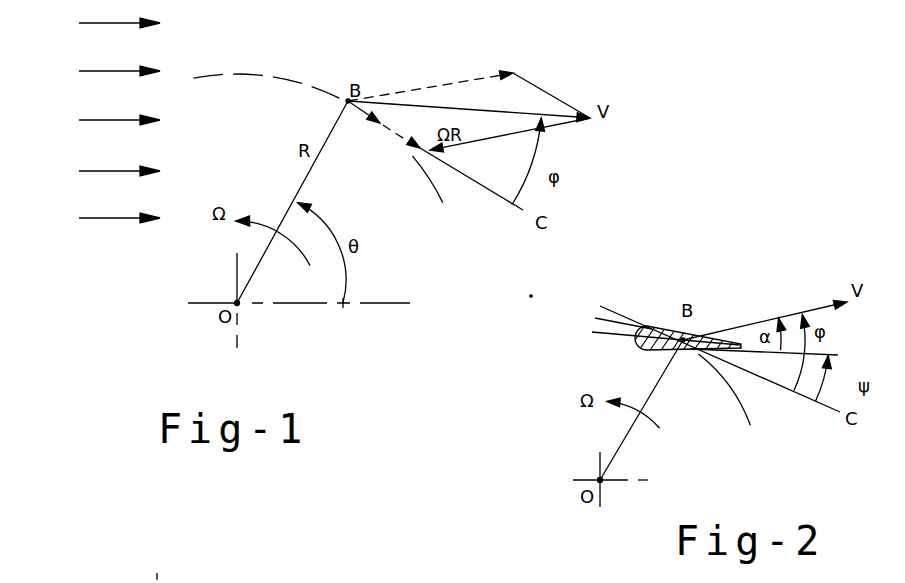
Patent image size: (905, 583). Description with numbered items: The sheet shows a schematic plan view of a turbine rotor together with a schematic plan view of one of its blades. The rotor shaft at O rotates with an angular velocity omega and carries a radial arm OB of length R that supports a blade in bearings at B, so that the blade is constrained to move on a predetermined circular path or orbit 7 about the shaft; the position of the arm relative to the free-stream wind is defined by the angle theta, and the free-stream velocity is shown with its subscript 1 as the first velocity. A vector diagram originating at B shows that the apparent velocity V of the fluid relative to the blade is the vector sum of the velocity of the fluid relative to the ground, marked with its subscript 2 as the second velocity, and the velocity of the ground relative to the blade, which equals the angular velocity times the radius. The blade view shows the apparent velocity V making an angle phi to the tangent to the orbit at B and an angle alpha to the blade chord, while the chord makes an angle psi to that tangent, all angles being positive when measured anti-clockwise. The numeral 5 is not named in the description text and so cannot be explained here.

The free stream wind velocity V1 1 is at (119, 120).
The induced flow velocity V2 2 is at (469, 88).
The rotor axis 5 is at (240, 305).
The circular path or orbit 7 is at (253, 74).